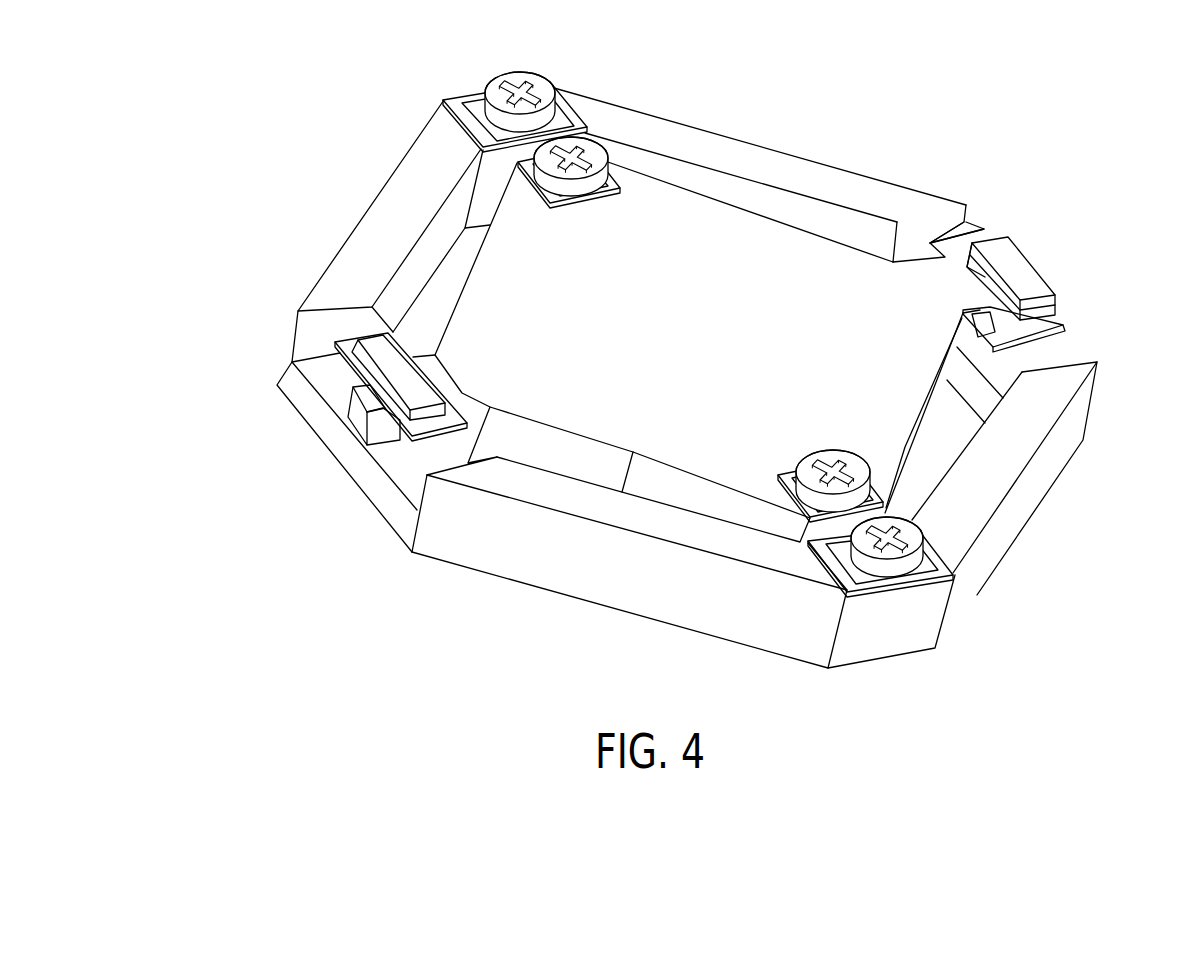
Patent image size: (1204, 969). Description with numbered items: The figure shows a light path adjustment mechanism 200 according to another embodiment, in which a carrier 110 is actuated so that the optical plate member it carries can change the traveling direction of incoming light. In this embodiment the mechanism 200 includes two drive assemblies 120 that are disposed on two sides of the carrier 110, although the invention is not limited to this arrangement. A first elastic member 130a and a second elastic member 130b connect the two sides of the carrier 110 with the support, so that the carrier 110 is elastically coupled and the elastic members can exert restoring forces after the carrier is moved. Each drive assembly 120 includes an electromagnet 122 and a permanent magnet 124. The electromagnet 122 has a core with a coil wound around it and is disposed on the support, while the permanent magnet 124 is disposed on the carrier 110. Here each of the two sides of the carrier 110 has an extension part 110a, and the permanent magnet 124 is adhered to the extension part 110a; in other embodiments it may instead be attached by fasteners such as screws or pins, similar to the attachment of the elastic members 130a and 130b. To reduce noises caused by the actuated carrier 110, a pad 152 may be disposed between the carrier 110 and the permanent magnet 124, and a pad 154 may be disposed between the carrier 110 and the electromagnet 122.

The light path adjustment mechanism 200 is at (239, 75).
The carrier 110 is at (743, 233).
The extension part 110a is at (964, 242).
The drive assembly 120 is at (210, 357).
The electromagnet 122 is at (356, 421).
The permanent magnet 124 is at (378, 353).
The first elastic member 130a is at (570, 127).
The second elastic member 130b is at (953, 573).
The pad 152 is at (985, 276).
The pad 154 is at (357, 370).